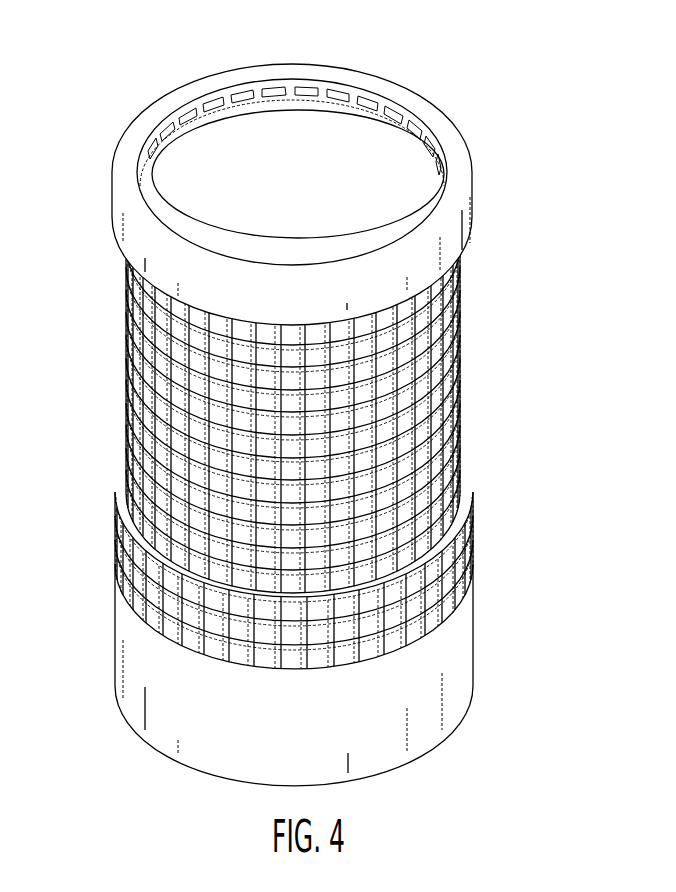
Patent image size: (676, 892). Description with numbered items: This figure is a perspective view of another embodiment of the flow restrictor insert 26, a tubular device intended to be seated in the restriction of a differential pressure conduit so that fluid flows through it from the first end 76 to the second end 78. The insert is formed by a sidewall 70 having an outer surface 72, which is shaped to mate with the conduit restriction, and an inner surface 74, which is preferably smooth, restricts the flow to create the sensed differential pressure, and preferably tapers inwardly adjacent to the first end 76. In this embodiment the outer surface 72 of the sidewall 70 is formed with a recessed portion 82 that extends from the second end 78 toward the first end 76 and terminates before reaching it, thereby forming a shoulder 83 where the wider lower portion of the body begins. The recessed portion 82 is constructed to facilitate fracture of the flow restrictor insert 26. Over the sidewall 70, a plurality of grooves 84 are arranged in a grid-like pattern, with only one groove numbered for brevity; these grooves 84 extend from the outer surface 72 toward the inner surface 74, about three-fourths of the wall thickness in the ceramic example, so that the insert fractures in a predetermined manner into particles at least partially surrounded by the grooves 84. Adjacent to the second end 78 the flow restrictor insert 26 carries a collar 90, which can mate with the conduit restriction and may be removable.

The flow restrictor insert 26 is at (118, 403).
The sidewall 70 is at (458, 463).
The outer surface 72 is at (123, 472).
The inner surface 74 is at (208, 120).
The first end 76 is at (390, 772).
The second end 78 is at (392, 128).
The recessed portion 82 is at (458, 340).
The shoulder 83 is at (468, 508).
The grooves 84 is at (462, 417).
The collar 90 is at (473, 187).